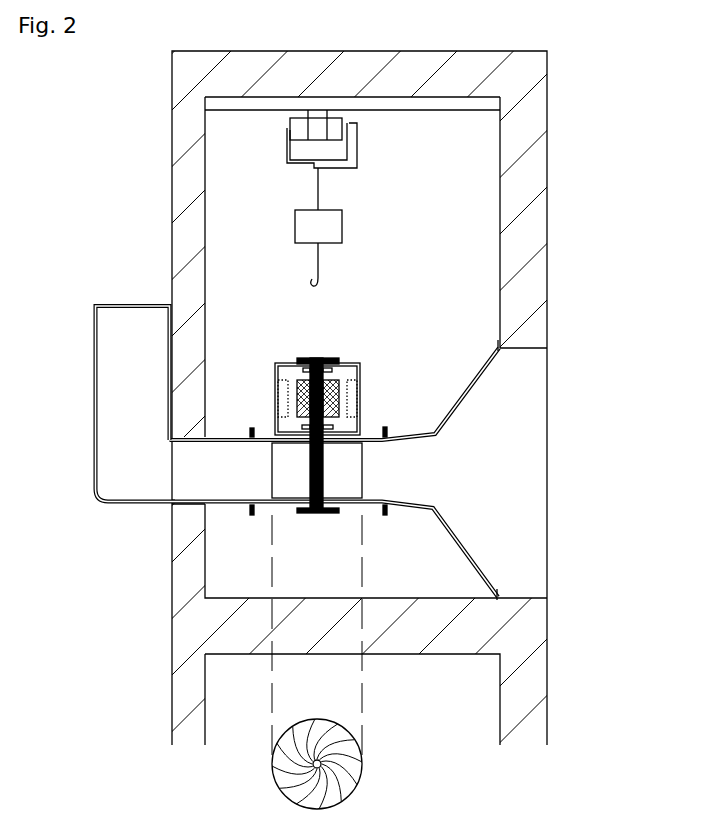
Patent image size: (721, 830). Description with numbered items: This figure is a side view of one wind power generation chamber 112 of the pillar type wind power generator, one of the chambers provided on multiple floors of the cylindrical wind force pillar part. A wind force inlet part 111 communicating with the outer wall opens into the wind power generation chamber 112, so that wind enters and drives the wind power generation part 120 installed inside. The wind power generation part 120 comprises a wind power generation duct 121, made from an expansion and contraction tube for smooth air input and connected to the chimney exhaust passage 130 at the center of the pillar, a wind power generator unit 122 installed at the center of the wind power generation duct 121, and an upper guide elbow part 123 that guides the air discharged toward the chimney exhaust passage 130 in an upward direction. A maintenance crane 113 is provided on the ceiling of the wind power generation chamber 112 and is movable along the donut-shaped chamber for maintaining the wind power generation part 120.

The wind force inlet part 111 is at (517, 532).
The wind power generation chamber 112 is at (423, 203).
The maintenance crane 113 is at (354, 207).
The wind power generation part 120 is at (378, 448).
The wind power generation duct 121 is at (415, 508).
The wind power generator unit 122 is at (361, 383).
The upper guide elbow part 123 is at (93, 407).
The chimney exhaust passage 130 is at (135, 590).